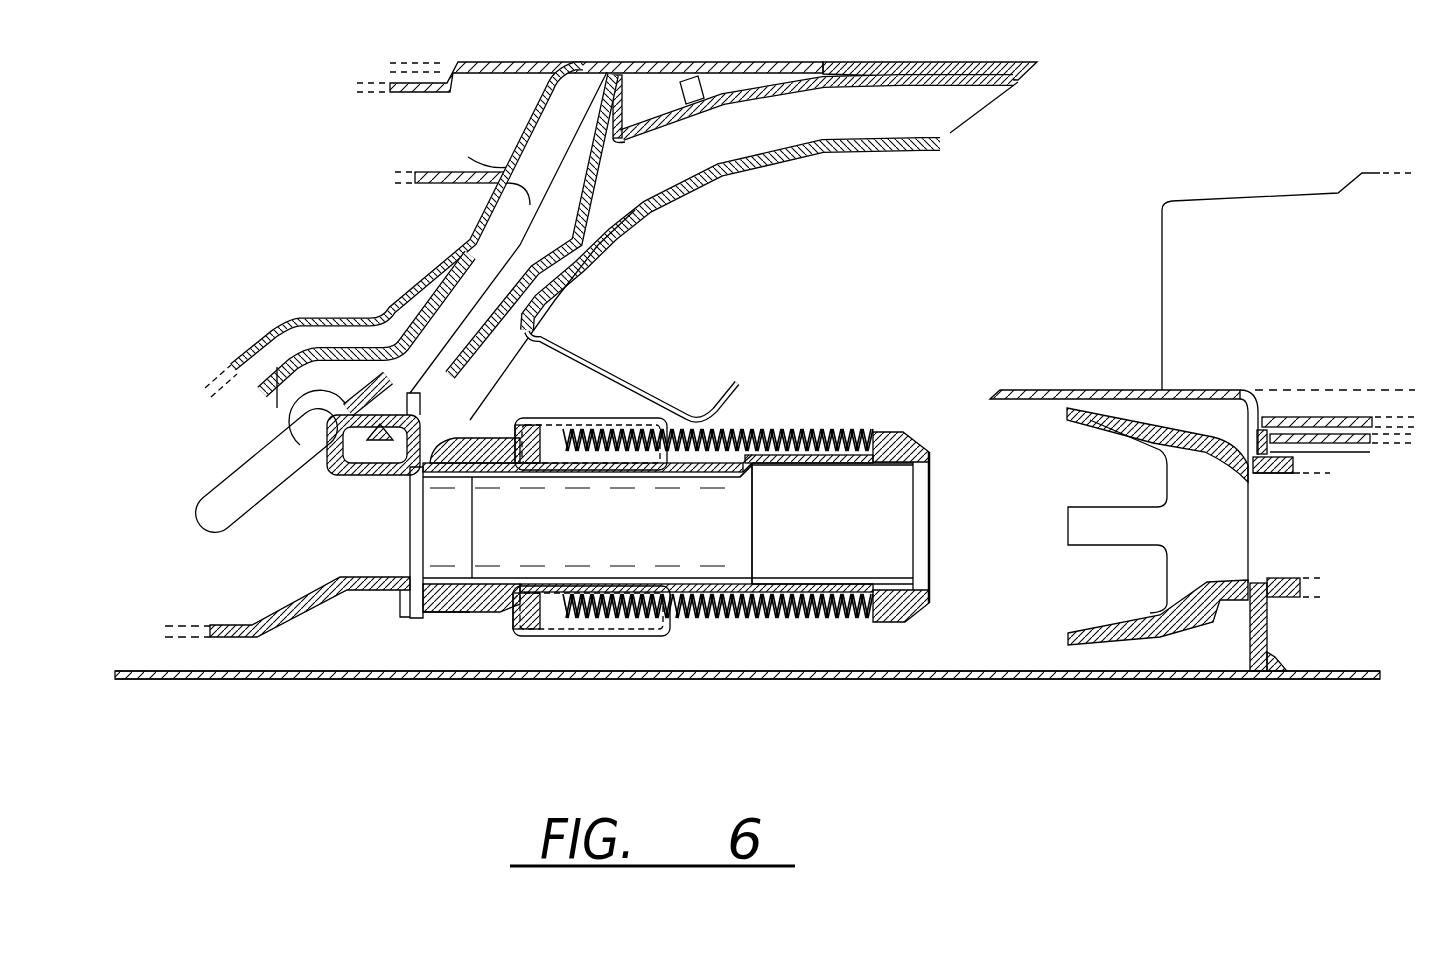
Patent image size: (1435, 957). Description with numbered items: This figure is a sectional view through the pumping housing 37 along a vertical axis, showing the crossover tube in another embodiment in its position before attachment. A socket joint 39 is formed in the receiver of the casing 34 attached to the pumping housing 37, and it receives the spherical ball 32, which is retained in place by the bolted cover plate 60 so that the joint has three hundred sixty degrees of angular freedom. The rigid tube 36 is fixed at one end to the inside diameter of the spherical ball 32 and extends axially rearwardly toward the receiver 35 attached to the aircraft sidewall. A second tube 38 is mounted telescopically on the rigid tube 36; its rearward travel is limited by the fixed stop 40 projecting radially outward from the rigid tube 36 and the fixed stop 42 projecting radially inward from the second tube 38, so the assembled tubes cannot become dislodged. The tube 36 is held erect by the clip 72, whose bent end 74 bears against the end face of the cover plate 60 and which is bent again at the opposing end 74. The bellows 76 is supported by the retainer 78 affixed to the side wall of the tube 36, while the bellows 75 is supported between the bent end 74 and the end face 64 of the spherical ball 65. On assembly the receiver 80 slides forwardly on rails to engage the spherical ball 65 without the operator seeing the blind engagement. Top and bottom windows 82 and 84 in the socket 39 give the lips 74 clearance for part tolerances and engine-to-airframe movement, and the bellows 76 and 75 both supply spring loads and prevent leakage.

The spherical ball 32 is at (487, 615).
The casing 34 is at (358, 612).
The receiver 35 is at (1180, 447).
The rigid tube 36 is at (600, 578).
The pumping housing 37 is at (420, 418).
The second tube 38 is at (848, 463).
The socket joint 39 is at (417, 620).
The fixed stop 40 is at (733, 478).
The fixed stop 42 is at (737, 434).
The cover plate 60 is at (543, 637).
The end face 64 is at (868, 623).
The spherical ball 65 is at (900, 428).
The clip 72 is at (600, 418).
The bent end 74 is at (676, 438).
The bellows 75 is at (817, 623).
The bellows 76 is at (647, 634).
The retainer 78 is at (557, 585).
The receiver 80 is at (1160, 630).
The top window 82 is at (457, 618).
The bottom window 84 is at (543, 338).